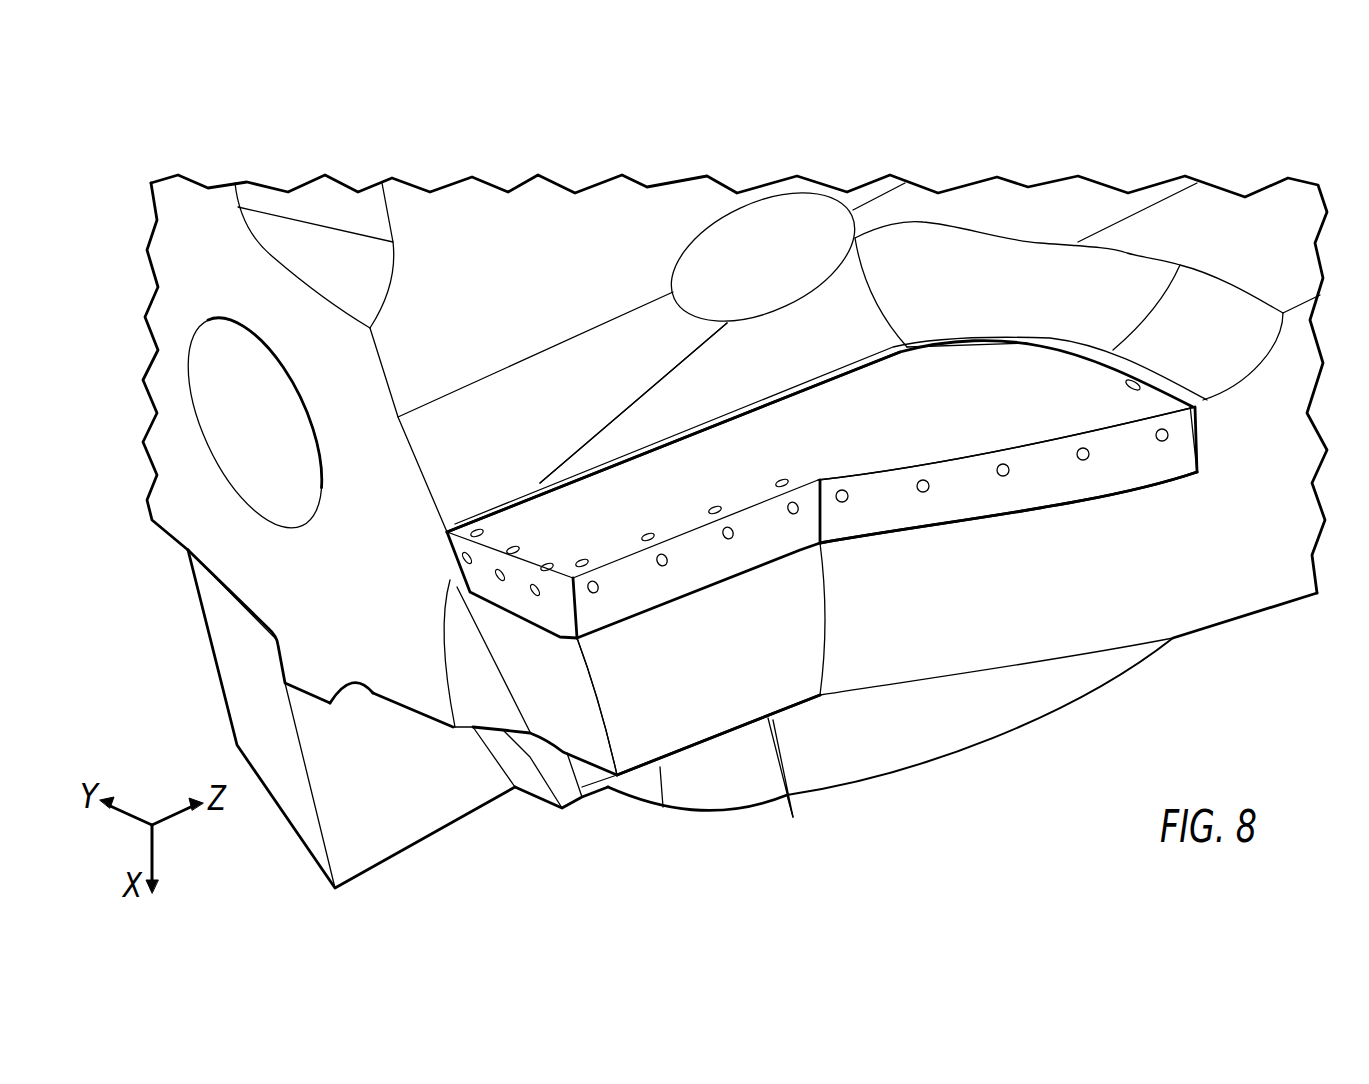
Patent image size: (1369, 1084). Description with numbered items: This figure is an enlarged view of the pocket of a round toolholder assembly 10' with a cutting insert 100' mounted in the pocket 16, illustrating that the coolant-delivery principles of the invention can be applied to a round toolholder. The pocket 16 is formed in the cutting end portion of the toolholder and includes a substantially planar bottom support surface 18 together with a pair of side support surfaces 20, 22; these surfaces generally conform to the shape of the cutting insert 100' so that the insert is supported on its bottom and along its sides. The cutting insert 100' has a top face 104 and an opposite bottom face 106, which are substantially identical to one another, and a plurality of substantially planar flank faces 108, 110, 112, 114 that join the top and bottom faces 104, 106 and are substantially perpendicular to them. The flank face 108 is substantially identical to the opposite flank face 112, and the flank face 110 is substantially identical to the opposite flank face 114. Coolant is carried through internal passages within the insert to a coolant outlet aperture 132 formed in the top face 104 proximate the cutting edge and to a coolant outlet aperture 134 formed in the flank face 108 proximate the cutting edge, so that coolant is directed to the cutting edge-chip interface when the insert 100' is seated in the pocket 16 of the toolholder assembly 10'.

The round toolholder assembly 10' is at (735, 487).
The cutting insert 100' is at (827, 490).
The top face 104 is at (930, 375).
The bottom face 106 is at (918, 533).
The flank face 108 is at (1053, 483).
The flank face 110 is at (1160, 388).
The flank face 112 is at (707, 423).
The flank face 114 is at (493, 588).
The pocket 16 is at (763, 573).
The bottom support surface 18 is at (623, 607).
The side support surface 20 is at (632, 460).
The side support surface 22 is at (1140, 386).
The coolant outlet aperture 132 is at (477, 530).
The coolant outlet aperture 134 is at (464, 558).